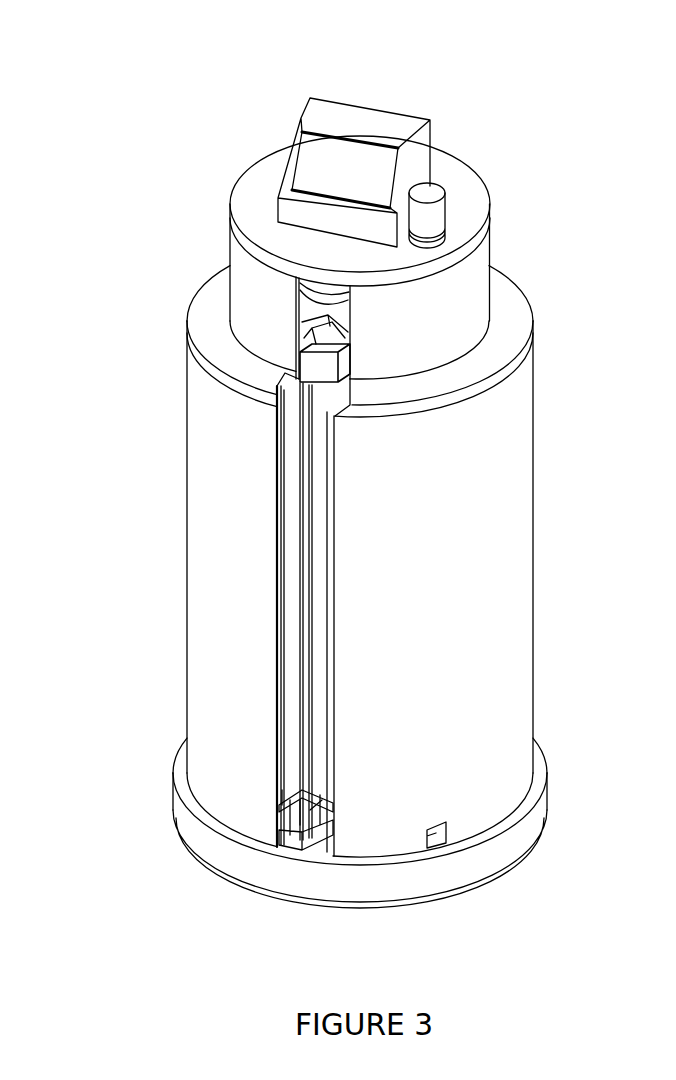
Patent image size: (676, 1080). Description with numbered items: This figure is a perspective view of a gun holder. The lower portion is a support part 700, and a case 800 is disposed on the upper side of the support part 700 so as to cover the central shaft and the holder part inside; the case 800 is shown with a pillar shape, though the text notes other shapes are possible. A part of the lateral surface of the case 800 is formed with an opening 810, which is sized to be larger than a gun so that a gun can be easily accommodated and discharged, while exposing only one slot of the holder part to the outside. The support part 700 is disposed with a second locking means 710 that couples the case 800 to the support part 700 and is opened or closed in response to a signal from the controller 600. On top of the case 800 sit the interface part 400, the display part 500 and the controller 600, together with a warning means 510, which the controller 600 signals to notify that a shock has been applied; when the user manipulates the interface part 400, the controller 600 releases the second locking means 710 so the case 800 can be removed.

The interface part 400 is at (453, 139).
The display part 500 is at (453, 139).
The controller 600 is at (397, 125).
The warning means 510 is at (436, 192).
The case 800 is at (192, 460).
The opening 810 is at (304, 589).
The support part 700 is at (212, 845).
The second locking means 710 is at (440, 833).